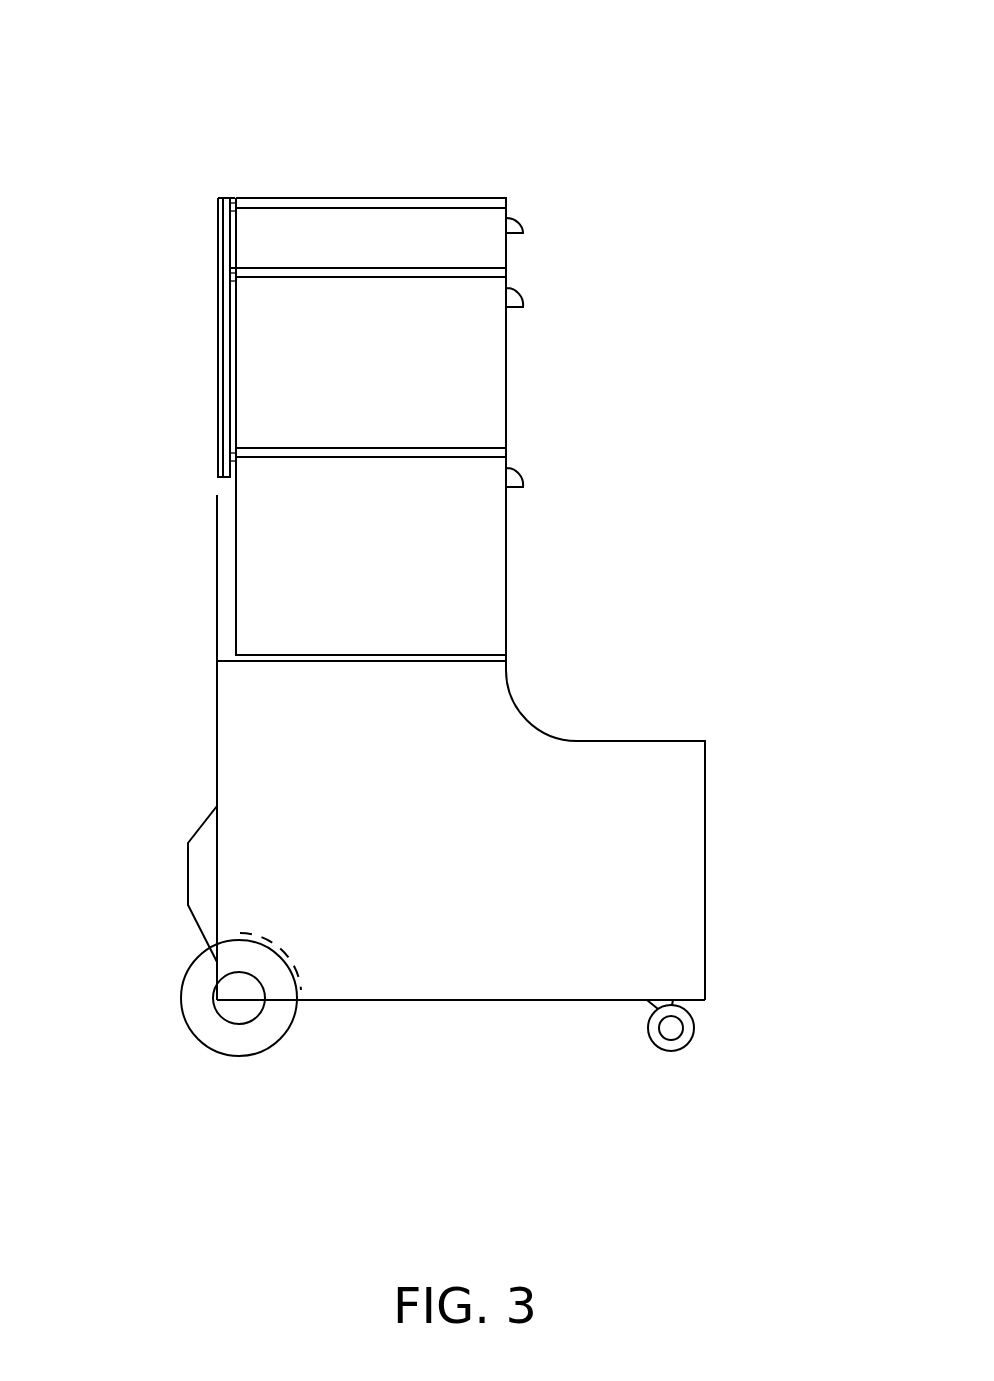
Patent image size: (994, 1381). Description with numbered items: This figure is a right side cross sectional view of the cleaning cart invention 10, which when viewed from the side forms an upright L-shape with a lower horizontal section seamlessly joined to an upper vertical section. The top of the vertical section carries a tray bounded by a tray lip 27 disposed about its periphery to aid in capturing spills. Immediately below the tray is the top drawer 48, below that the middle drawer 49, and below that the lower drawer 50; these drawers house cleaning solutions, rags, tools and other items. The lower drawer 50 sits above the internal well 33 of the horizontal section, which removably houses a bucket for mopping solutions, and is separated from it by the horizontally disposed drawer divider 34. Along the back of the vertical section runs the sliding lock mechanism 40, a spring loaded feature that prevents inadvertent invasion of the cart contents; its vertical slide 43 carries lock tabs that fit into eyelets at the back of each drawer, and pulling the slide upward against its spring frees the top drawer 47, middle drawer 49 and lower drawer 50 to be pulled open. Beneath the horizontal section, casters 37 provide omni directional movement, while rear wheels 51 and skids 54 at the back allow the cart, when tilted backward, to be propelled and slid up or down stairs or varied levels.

The invention 10 is at (790, 257).
The tray lip 27 is at (442, 198).
The internal well 33 is at (640, 710).
The drawer divider 34 is at (502, 453).
The casters 37 is at (695, 1028).
The sliding lock mechanism 40 is at (258, 250).
The vertical slide 43 is at (223, 310).
The top drawer 47 is at (521, 218).
The top drawer 48 is at (497, 248).
The middle drawer 49 is at (507, 398).
The lower drawer 50 is at (506, 583).
The rear wheels 51 is at (188, 955).
The skids 54 is at (192, 835).